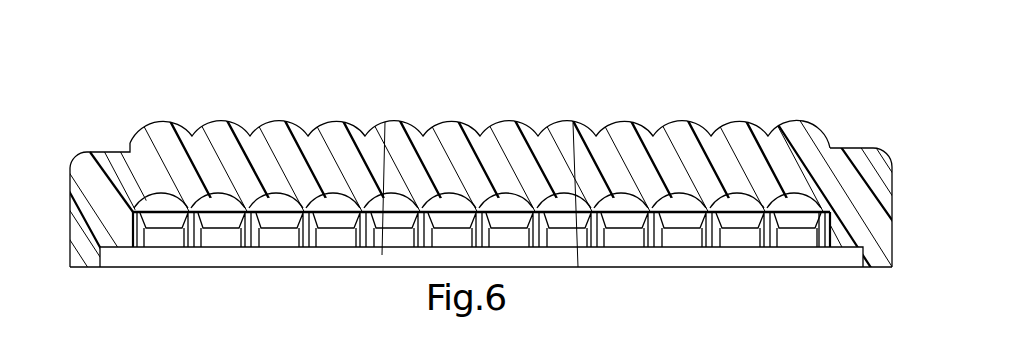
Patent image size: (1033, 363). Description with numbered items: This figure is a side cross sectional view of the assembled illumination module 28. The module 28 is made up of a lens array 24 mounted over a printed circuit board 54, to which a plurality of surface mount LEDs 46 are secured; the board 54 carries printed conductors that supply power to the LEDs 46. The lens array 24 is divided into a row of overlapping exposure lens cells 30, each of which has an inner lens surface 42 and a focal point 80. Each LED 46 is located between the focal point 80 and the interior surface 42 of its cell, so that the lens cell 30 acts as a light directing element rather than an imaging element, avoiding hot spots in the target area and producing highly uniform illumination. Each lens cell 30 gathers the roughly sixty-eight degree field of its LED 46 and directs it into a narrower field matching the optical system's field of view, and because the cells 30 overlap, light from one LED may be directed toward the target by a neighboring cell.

The lens array 24 is at (848, 178).
The illumination module 28 is at (487, 189).
The exposure lens cell 30 is at (267, 123).
The inner lens surface 42 is at (143, 193).
The surface mount LED 46 is at (797, 242).
The printed circuit board 54 is at (748, 263).
The focal point 80 is at (145, 185).